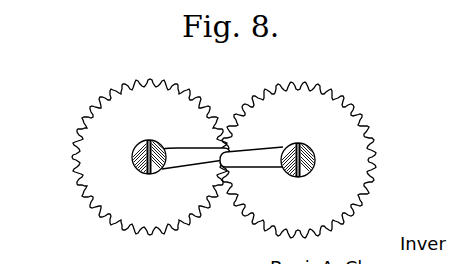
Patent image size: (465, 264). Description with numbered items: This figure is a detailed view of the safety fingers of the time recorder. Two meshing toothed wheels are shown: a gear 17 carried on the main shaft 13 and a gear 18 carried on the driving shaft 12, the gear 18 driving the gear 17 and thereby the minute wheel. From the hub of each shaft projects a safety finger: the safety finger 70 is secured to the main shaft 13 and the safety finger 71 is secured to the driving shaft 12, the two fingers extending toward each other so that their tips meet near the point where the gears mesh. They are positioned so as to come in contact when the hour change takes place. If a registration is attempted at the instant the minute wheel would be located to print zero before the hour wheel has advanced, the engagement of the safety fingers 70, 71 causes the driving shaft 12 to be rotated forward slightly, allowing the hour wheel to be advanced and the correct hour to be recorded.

The driving shaft 12 is at (311, 148).
The main shaft 13 is at (142, 163).
The gear 17 is at (101, 118).
The gear 18 is at (353, 125).
The safety finger 70 is at (216, 148).
The safety finger 71 is at (233, 164).